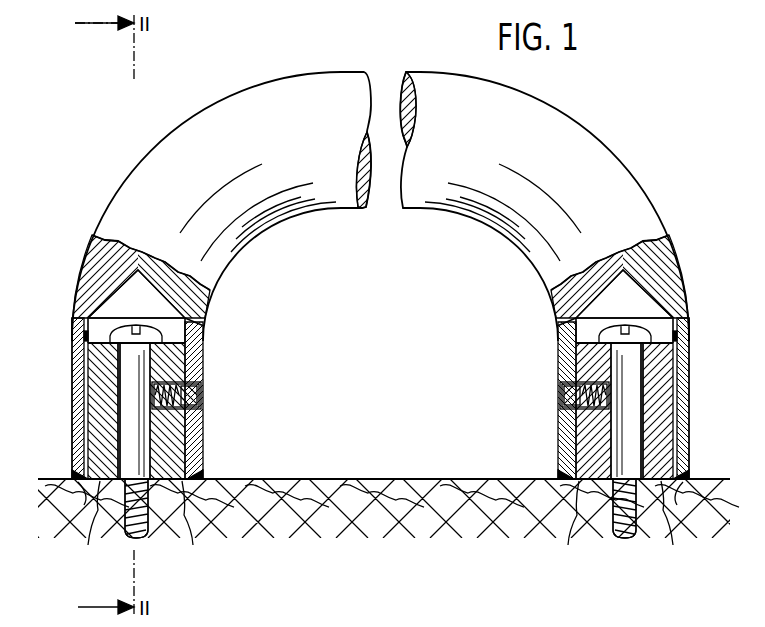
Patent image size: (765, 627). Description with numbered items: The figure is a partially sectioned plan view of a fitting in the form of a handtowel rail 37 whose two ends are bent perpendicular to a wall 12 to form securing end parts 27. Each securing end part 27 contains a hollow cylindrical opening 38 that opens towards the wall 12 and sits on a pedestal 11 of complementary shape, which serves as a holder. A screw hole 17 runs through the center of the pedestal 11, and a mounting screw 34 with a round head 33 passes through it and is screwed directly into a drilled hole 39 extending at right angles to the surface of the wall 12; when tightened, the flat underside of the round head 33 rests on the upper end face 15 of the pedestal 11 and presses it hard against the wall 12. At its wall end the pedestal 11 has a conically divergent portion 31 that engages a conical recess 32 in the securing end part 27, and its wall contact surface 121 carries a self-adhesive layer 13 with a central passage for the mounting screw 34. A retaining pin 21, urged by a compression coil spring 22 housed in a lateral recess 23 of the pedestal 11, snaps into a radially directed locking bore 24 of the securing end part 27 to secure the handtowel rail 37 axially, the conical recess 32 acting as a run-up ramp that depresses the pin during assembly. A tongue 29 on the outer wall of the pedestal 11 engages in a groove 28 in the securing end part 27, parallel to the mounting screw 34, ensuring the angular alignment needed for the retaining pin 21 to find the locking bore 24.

The handtowel rail 37 is at (614, 121).
The wall 12 is at (360, 527).
The upper end face 15 is at (678, 318).
The pedestal 11 is at (572, 350).
The hollow cylindrical opening 38 is at (575, 322).
The groove 28 is at (676, 338).
The tongue 29 is at (680, 360).
The securing end part 27 is at (680, 432).
The screw hole 17 is at (640, 410).
The mounting screw 34 is at (625, 395).
The round head 33 is at (632, 330).
The self-adhesive layer 13 is at (670, 490).
The drilled hole 39 is at (637, 528).
The retaining pin 21 is at (570, 410).
The compression coil spring 22 is at (565, 400).
The lateral recess 23 is at (575, 420).
The locking bore 24 is at (560, 395).
The conical recess 32 is at (680, 470).
The conically divergent portion 31 is at (672, 492).
The wall contact surface 121 is at (576, 540).